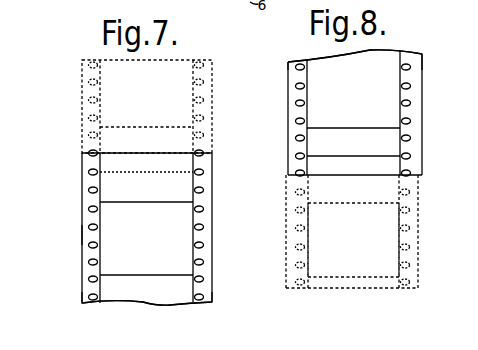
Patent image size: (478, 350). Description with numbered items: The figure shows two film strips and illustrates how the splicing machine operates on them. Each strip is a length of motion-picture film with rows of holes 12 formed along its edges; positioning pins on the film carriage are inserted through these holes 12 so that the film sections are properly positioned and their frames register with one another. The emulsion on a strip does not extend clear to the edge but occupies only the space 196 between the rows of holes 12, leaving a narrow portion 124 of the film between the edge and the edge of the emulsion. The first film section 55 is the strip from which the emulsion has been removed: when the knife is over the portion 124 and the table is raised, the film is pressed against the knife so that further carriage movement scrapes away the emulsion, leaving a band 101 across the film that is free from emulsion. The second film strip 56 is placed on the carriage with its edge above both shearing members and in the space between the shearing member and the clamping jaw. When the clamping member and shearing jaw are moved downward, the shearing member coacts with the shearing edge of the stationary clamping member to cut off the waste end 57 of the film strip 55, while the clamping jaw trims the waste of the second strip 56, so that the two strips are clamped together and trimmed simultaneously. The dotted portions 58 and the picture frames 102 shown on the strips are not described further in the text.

In FIG. 7, the holes 12 is at (90, 191).
In FIG. 8, the holes 12 is at (298, 88).
In FIG. 8, the first film section 55 is at (422, 108).
In FIG. 7, the second film strip 56 is at (82, 257).
In FIG. 8, the waste end 57 is at (421, 251).
In FIG. 7, the film strip portion (dashed) 58 is at (82, 83).
In FIG. 8, the band free from emulsion 101 is at (380, 165).
In FIG. 7, the picture frame 102 is at (146, 126).
In FIG. 8, the picture frame 102 is at (370, 57).
In FIG. 7, the portion of the film between the edge and the emulsion 124 is at (82, 234).
In FIG. 7, the space between the rows of holes 196 is at (171, 286).
In FIG. 8, the space between the rows of holes 196 is at (312, 65).